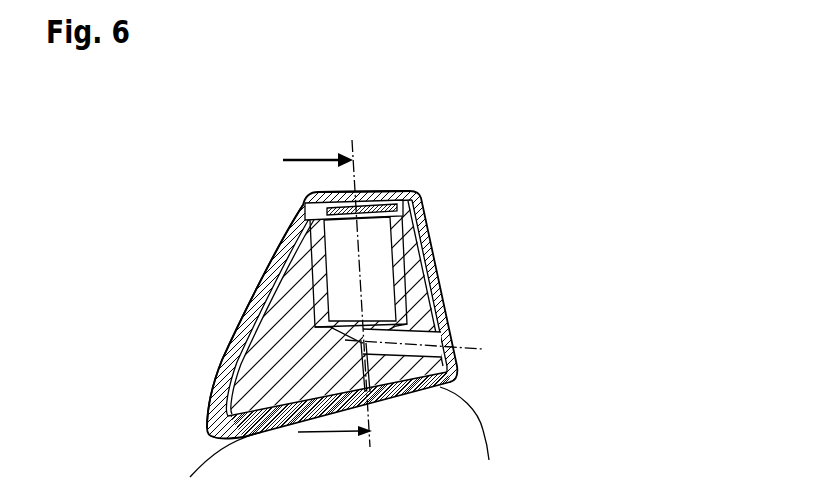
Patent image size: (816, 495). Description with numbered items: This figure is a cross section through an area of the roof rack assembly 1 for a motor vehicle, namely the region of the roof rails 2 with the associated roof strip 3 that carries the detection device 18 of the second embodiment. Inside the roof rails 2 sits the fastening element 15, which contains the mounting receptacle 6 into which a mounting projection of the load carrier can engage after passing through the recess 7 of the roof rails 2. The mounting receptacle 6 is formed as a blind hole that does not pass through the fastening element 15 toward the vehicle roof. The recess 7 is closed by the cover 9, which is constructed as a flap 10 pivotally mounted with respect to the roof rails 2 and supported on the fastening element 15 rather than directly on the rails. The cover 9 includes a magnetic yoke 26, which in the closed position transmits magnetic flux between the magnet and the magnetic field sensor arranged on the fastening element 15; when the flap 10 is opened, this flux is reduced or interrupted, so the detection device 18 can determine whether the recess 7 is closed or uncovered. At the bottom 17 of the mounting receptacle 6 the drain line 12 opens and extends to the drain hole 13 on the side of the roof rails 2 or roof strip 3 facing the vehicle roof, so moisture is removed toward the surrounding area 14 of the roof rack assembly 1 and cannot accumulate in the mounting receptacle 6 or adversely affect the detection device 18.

The roof rack assembly 1 is at (468, 134).
The roof rails 2 is at (499, 216).
The roof strip 3 is at (450, 306).
The mounting receptacle 6 is at (387, 260).
The recess 7 is at (400, 191).
The cover 9 is at (374, 204).
The flap 10 is at (362, 209).
The drain line 12 is at (448, 333).
The drain hole 13 is at (450, 357).
The surrounding area 14 is at (593, 337).
The fastening element 15 is at (272, 335).
The bottom 17 is at (374, 393).
The detection device 18 is at (256, 196).
The magnetic yoke 26 is at (358, 204).